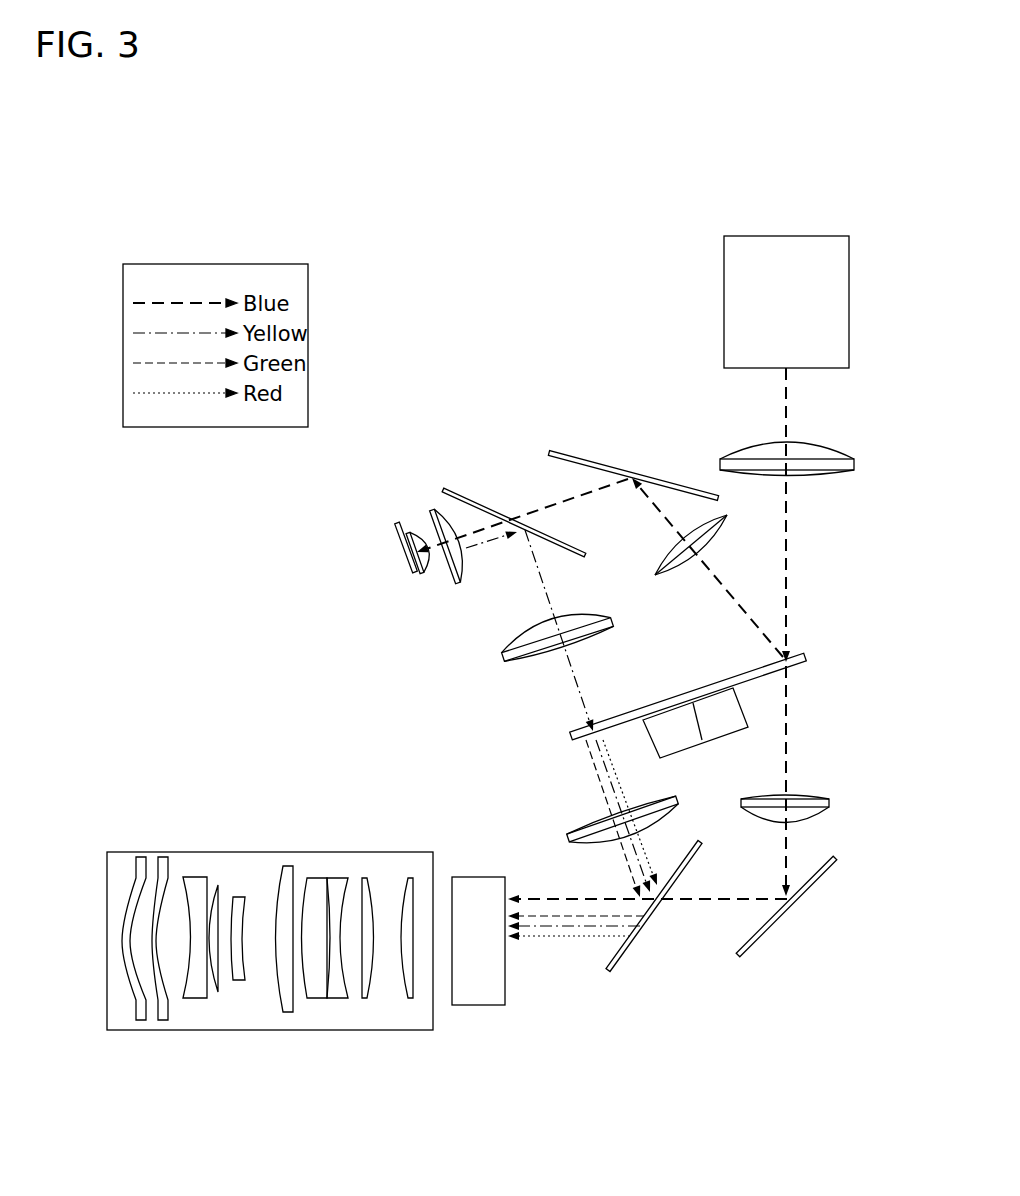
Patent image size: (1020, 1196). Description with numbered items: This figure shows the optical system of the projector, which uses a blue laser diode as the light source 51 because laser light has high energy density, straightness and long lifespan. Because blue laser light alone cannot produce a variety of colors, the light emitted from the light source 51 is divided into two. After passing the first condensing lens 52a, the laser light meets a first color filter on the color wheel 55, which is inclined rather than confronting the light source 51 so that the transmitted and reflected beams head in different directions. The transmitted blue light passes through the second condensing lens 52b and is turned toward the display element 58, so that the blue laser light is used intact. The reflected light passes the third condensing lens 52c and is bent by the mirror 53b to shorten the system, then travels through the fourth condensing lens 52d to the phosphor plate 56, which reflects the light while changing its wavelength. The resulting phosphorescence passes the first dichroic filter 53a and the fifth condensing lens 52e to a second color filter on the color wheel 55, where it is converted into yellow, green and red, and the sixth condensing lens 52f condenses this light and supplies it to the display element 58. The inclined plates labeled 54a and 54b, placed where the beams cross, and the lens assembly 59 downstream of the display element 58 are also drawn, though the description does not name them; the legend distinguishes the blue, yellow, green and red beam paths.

The light source 51 is at (849, 300).
The first condensing lens 52a is at (822, 455).
The second condensing lens 52b is at (830, 803).
The third condensing lens 52c is at (710, 540).
The fourth condensing lens 52d is at (412, 533).
The fifth condensing lens 52e is at (503, 662).
The sixth condensing lens 52f is at (580, 838).
The first dichroic filter 53a is at (828, 870).
The second dichroic filter 53b is at (595, 462).
The dichroic mirror 54a is at (455, 495).
The dichroic mirror 54b is at (622, 958).
The color wheel 55 is at (806, 658).
The phosphor plate 56 is at (402, 537).
The display element 58 is at (478, 877).
The projection lens 59 is at (272, 852).